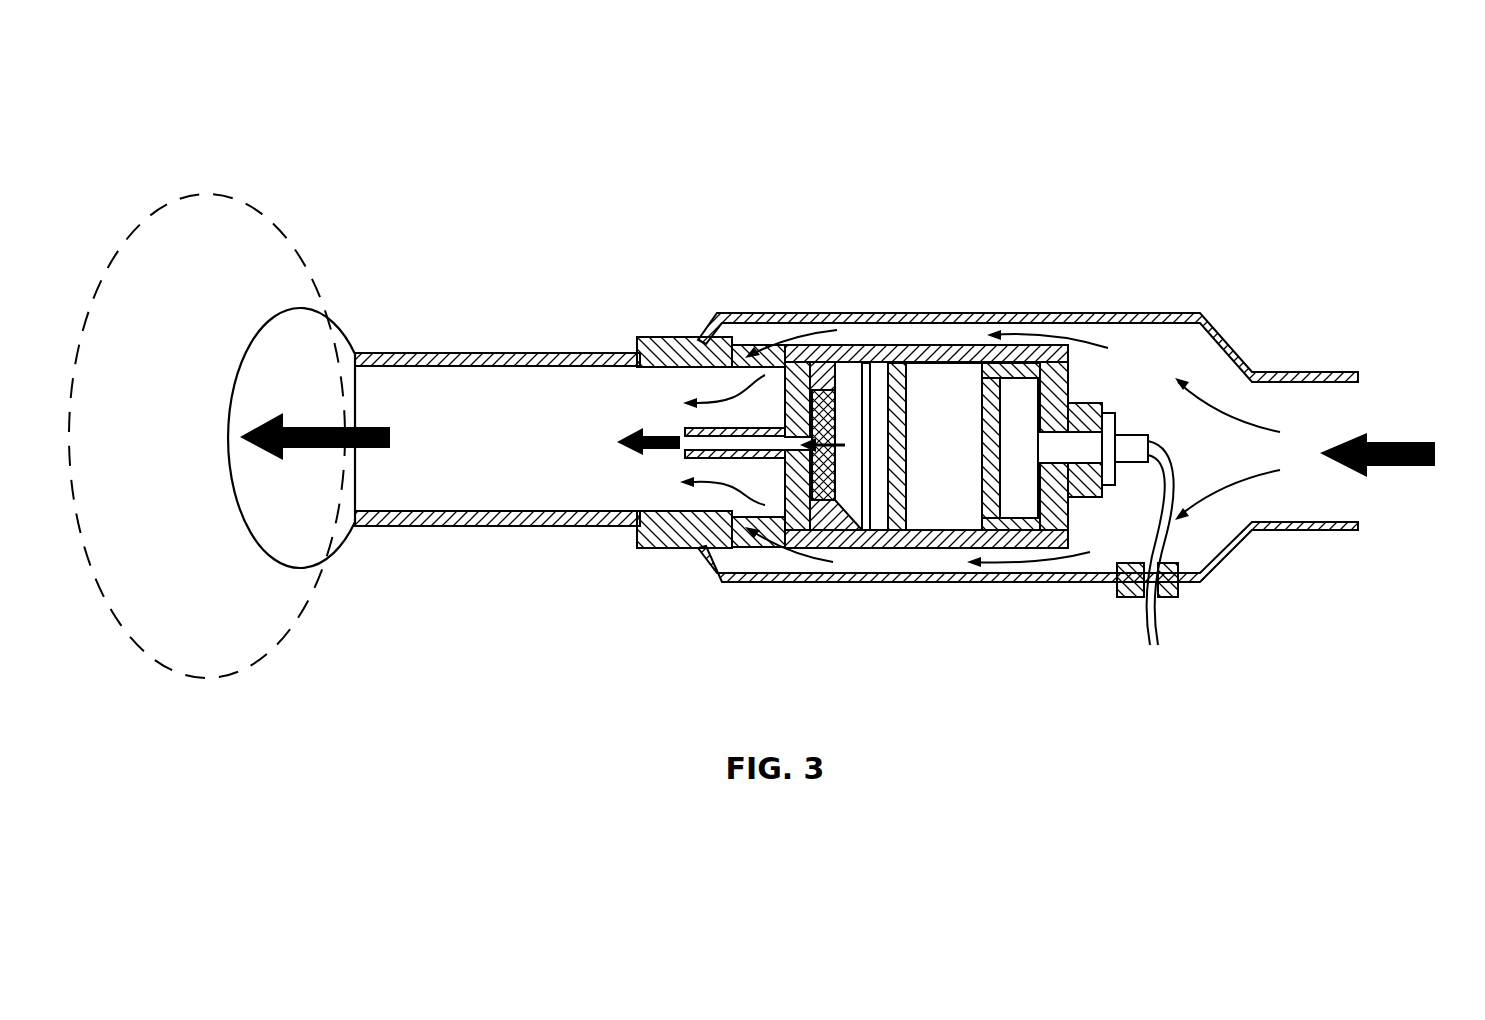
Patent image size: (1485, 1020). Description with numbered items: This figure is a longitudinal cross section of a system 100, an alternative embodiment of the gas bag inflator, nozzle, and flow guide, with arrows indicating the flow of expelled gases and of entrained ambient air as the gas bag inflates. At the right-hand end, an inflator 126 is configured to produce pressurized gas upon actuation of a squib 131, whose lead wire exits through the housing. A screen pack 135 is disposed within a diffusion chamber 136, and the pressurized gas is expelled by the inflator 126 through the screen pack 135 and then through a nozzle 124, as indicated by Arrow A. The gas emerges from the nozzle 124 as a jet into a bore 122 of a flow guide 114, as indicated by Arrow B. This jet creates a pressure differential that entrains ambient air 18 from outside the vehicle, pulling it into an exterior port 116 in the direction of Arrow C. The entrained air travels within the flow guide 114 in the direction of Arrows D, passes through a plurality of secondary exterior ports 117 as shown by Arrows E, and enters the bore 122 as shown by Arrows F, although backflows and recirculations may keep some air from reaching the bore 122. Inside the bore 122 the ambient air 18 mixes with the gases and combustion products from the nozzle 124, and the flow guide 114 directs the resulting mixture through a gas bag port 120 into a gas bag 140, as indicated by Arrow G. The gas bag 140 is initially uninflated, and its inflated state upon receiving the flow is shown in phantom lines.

The system 100 is at (450, 188).
The flow guide 114 is at (480, 518).
The exterior port 116 is at (1345, 412).
The secondary exterior ports 117 is at (792, 345).
The gas bag port 120 is at (355, 483).
The bore 122 is at (520, 479).
The nozzle 124 is at (738, 515).
The inflator 126 is at (1013, 530).
The squib 131 is at (1128, 440).
The screen pack 135 is at (825, 500).
The diffusion chamber 136 is at (875, 500).
The gas bag 140 is at (238, 508).
The ambient air 18 is at (1422, 523).
The Arrow A is at (835, 395).
The Arrow B is at (640, 440).
The Arrow C is at (1405, 440).
The Arrows D is at (1046, 340).
The Arrows E is at (762, 340).
The Arrows F is at (705, 378).
The Arrow G is at (345, 425).